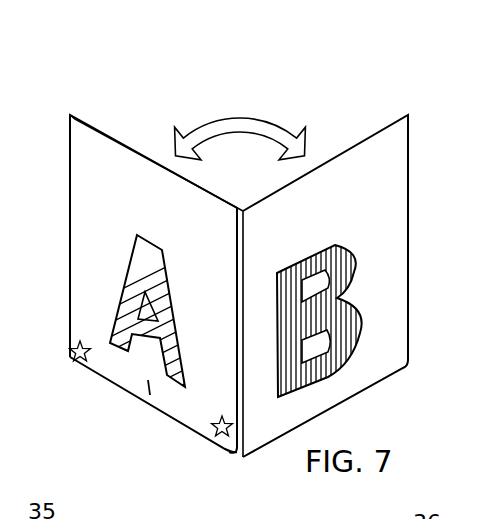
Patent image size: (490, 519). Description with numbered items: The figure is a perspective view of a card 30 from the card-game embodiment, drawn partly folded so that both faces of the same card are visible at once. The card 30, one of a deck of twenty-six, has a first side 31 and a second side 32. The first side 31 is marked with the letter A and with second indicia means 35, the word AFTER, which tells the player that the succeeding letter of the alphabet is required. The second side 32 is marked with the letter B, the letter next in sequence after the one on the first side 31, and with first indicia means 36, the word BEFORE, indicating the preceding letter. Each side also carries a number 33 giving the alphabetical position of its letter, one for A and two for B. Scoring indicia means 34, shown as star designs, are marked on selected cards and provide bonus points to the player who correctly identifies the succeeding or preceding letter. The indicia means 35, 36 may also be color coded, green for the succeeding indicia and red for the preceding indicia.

The card 30 is at (244, 304).
The first side 31 is at (84, 268).
The second side 32 is at (392, 286).
The number 33 is at (143, 395).
The scoring indicia means 34 is at (71, 362).
The second indicia means 35 is at (103, 181).
The first indicia means 36 is at (363, 197).